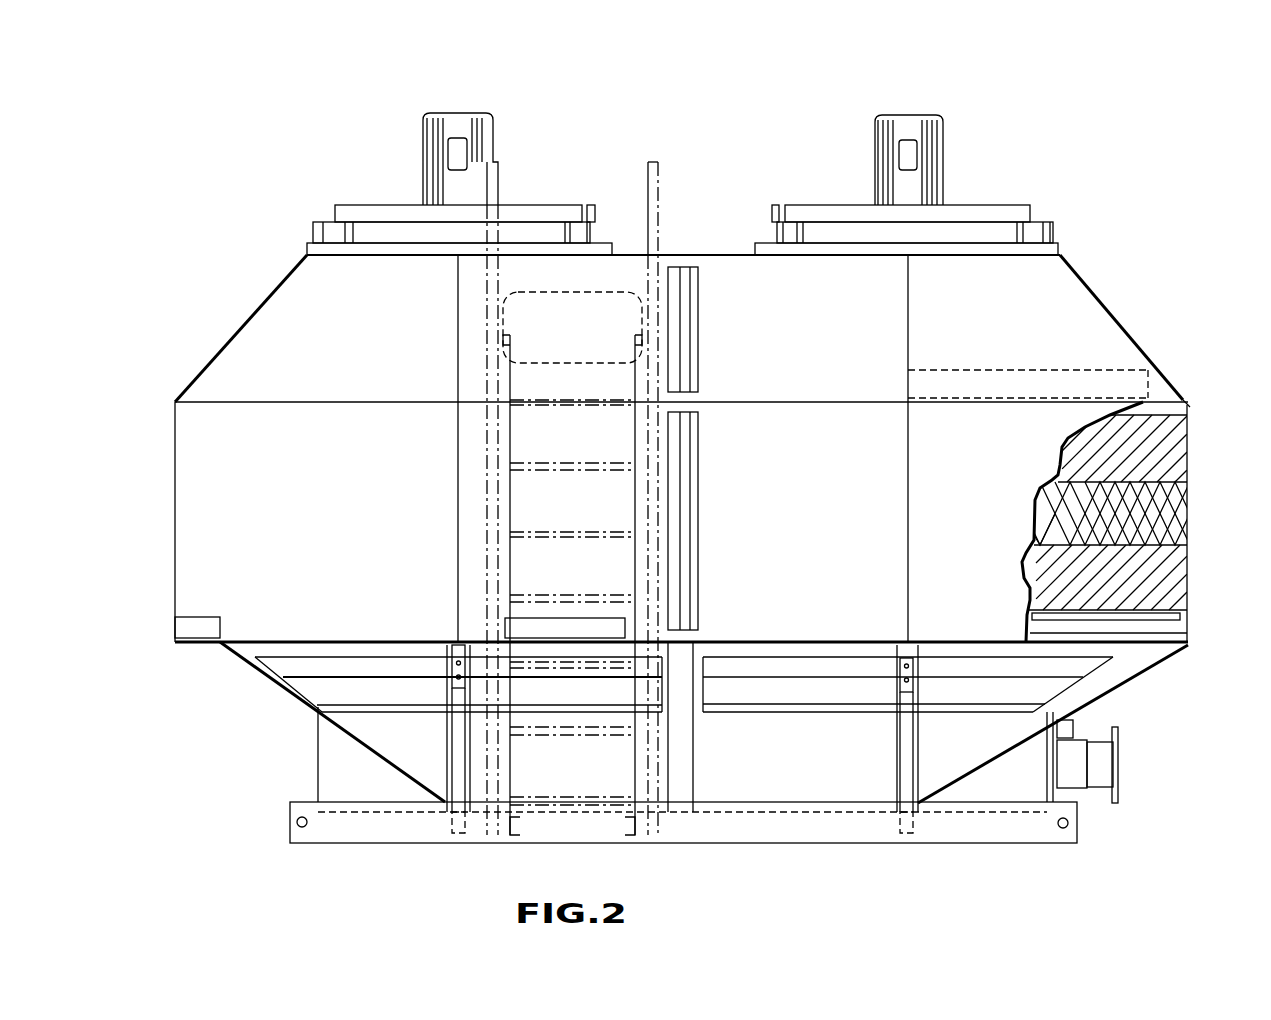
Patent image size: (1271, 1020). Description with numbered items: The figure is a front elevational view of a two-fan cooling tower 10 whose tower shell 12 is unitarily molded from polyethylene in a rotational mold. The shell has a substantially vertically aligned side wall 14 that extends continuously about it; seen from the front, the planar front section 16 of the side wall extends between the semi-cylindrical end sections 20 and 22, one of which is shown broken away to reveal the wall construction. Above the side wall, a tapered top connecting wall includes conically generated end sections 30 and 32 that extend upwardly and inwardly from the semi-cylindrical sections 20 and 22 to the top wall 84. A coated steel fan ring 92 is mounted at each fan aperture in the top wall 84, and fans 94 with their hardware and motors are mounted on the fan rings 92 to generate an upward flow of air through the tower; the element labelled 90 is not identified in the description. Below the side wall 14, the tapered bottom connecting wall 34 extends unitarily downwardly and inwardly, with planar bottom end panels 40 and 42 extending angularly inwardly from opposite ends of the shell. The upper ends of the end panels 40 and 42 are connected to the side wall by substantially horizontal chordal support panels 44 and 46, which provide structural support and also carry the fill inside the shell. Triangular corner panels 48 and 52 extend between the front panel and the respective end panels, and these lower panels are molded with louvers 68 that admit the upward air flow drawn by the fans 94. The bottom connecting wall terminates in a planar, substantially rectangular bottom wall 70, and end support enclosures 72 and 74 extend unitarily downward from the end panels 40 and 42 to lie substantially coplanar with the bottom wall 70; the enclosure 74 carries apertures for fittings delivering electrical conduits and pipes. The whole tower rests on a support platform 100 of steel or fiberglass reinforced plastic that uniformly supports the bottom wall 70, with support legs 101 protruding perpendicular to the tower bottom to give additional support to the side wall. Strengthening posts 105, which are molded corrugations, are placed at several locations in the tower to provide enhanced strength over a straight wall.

The cooling tower 10 is at (1046, 138).
The tower shell 12 is at (1133, 230).
The side wall 14 is at (170, 578).
The front section 16 is at (815, 572).
The semi-cylindrical end section 20 is at (175, 447).
The semi-cylindrical end section 22 is at (1045, 467).
The conically generated end section 30 is at (247, 330).
The conically generated end section 32 is at (1088, 302).
The tapered bottom connecting wall 34 is at (980, 780).
The bottom end panel 40 is at (245, 665).
The bottom end panel 42 is at (1105, 680).
The chordal support panel 44 is at (188, 646).
The chordal support panel 46 is at (1168, 646).
The triangular corner panel 48 is at (405, 764).
The triangular corner panel 52 is at (945, 762).
The louvers 68 is at (328, 692).
The bottom wall 70 is at (762, 812).
The end support enclosure 72 is at (318, 785).
The end support enclosure 74 is at (1045, 768).
The top wall 84 is at (685, 255).
The left roof hatch frame 90 is at (307, 236).
The fan ring 92 is at (1058, 237).
The fan 94 is at (481, 113).
The support platform 100 is at (290, 830).
The support legs 101 is at (445, 782).
The strengthening posts 105 is at (700, 335).